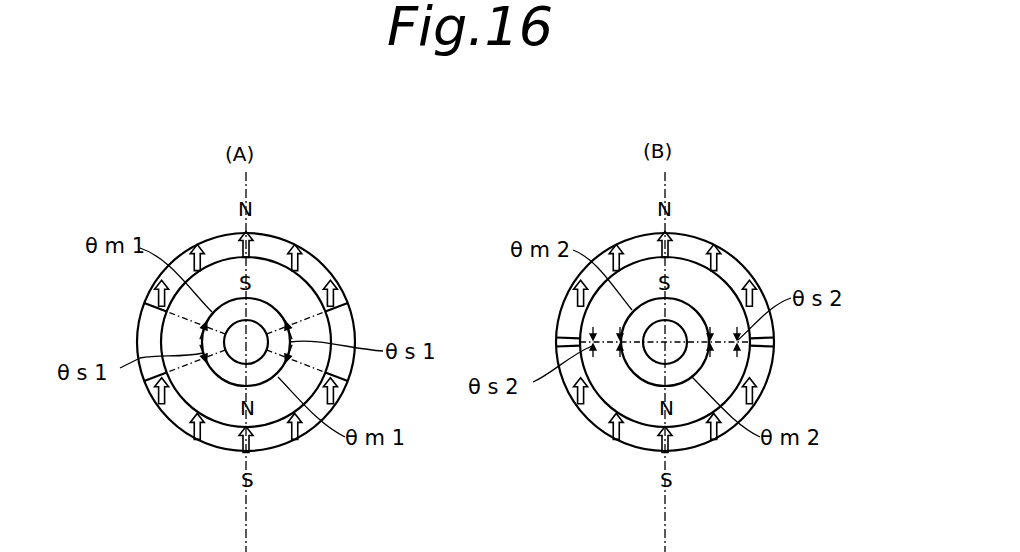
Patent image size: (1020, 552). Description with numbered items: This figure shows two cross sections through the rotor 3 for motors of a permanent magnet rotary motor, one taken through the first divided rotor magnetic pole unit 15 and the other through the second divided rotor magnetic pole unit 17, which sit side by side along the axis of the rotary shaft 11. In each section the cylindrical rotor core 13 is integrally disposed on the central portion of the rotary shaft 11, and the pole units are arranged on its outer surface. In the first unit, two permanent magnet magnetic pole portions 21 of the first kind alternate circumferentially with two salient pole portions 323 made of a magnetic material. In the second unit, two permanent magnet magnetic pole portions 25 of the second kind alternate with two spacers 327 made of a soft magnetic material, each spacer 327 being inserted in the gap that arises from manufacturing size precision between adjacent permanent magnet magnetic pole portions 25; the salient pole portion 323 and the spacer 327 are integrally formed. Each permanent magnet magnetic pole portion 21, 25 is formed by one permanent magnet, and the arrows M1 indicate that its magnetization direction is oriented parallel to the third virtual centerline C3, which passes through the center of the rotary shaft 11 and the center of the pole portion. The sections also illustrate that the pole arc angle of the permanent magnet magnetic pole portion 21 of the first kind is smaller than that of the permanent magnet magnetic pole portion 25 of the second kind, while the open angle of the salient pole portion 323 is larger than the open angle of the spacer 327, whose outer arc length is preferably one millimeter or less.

The rotor for motors 3 is at (134, 290).
The rotary shaft 11 is at (302, 295).
The rotor core 13 is at (263, 325).
The first divided rotor magnetic pole unit 15 is at (350, 282).
The second divided rotor magnetic pole unit 17 is at (752, 258).
The permanent magnet magnetic pole portion of the first kind 21 is at (275, 238).
The permanent magnet magnetic pole portion of the second kind 25 is at (695, 238).
The salient pole portion 323 is at (140, 329).
The spacer 327 is at (557, 343).
The magnetization direction M1 is at (192, 250).
The third virtual centerline C3 is at (248, 533).